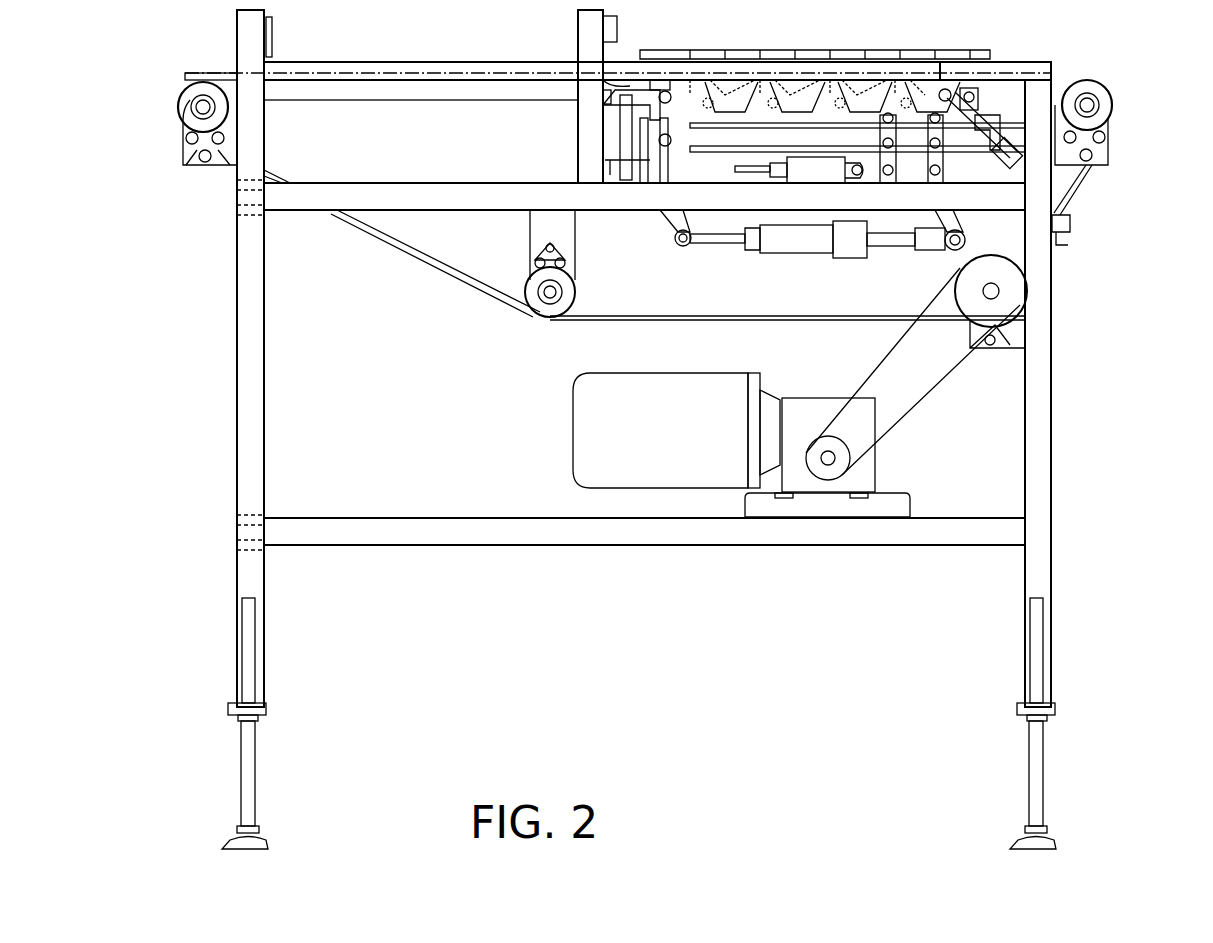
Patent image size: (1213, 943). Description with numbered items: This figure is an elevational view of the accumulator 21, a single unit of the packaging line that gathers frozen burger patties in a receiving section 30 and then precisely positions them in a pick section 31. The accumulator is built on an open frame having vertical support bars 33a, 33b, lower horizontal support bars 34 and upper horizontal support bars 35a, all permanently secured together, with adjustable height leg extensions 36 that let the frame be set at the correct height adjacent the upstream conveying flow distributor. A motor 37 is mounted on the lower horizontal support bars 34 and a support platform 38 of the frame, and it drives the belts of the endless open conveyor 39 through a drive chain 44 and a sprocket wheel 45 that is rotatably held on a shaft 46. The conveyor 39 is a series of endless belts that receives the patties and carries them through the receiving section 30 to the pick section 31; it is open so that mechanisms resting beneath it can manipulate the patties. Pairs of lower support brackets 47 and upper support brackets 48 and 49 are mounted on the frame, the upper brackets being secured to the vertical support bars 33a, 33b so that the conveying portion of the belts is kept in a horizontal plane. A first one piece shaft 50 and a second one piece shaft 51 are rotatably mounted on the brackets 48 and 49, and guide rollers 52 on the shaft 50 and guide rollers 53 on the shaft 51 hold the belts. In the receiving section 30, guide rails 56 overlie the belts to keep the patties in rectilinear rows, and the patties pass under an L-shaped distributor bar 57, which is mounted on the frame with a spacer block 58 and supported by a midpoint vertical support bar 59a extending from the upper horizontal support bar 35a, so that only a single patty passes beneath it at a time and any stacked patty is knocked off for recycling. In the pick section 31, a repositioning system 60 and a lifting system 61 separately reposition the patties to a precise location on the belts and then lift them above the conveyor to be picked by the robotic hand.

The accumulator 21 is at (627, 429).
The receiving section 30 is at (392, 45).
The pick section 31 is at (893, 45).
The vertical support bar 33a is at (238, 386).
The vertical support bar 33b is at (1050, 393).
The lower horizontal support bar 34 is at (490, 532).
The upper horizontal support bar 35a is at (418, 193).
The adjustable height leg extension 36 is at (248, 800).
The motor 37 is at (724, 432).
The support platform 38 is at (905, 490).
The endless open conveyor 39 is at (458, 280).
The drive chain 44 is at (940, 322).
The sprocket wheel 45 is at (1010, 302).
The shaft 46 is at (1000, 290).
The lower support bracket 47 is at (560, 252).
The upper support bracket 48 is at (228, 170).
The upper support bracket 49 is at (1070, 160).
The first one piece shaft 50 is at (200, 97).
The second one piece shaft 51 is at (1092, 98).
The guide roller 52 is at (185, 125).
The guide roller 53 is at (1100, 120).
The guide rail 56 is at (1038, 68).
The L-shaped distributor bar 57 is at (612, 58).
The spacer block 58 is at (610, 38).
The midpoint vertical support bar 59a is at (588, 54).
The repositioning system 60 is at (816, 190).
The lifting system 61 is at (812, 258).